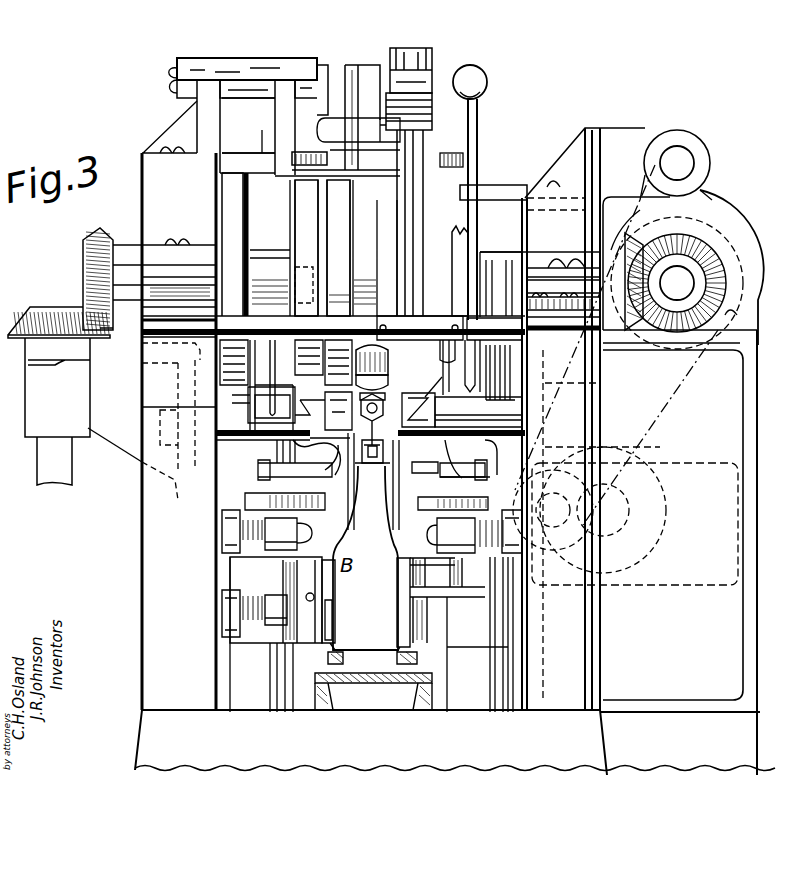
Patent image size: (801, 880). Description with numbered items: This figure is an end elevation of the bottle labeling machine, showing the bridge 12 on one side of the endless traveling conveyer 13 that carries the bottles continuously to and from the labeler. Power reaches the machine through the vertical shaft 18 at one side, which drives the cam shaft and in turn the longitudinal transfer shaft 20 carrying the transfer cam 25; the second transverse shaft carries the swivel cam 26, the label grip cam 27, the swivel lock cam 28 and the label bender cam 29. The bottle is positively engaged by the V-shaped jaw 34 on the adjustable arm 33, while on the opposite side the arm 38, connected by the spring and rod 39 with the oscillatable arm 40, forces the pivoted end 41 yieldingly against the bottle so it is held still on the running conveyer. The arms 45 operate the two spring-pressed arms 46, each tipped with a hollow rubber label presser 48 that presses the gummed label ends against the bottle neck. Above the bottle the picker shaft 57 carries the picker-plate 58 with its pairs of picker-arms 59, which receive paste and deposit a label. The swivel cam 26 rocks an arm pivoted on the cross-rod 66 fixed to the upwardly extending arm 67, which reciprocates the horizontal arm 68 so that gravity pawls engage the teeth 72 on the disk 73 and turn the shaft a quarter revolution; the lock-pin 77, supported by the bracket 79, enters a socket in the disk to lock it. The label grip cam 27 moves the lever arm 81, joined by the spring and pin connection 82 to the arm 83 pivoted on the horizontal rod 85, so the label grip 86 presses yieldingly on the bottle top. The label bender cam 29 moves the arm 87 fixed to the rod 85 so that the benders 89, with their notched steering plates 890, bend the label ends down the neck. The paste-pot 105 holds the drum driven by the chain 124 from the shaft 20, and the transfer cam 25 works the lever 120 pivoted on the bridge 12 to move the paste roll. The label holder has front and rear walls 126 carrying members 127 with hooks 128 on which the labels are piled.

The bridge 12 is at (572, 148).
The traveling conveyer 13 is at (373, 681).
The vertical shaft 18 is at (42, 468).
The longitudinal transfer shaft 20 is at (688, 274).
The transfer cam 25 is at (742, 242).
The swivel cam 26 is at (462, 271).
The label grip cam 27 is at (338, 248).
The swivel lock cam 28 is at (306, 248).
The label bender cam 29 is at (233, 244).
The arm 33 is at (468, 598).
The V-shaped jaw 34 is at (407, 590).
The arm 38 is at (222, 627).
The spring and rod 39 is at (262, 622).
The arm 40 is at (278, 583).
The pivoted end 41 is at (325, 613).
The arm 45 is at (222, 524).
The spring-pressed arm 46 is at (303, 495).
The rubber label presser 48 is at (373, 535).
The picker shaft 57 is at (378, 62).
The picker-plate 58 is at (462, 402).
The picker-arms 59 is at (322, 462).
The cross-rod 66 is at (494, 322).
The upwardly extending arm 67 is at (420, 212).
The horizontal arm 68 is at (410, 48).
The teeth 72 is at (346, 148).
The disk 73 is at (450, 150).
The lock-pin 77 is at (292, 60).
The bracket 79 is at (242, 152).
The arm 81 is at (323, 411).
The spring and pin connection 82 is at (386, 380).
The arm 83 is at (386, 360).
The horizontal rod 85 is at (468, 459).
The label grip 86 is at (376, 419).
The arm 87 is at (262, 380).
The bender 89 is at (428, 466).
The paste-pot 105 is at (676, 584).
The lever 120 is at (710, 193).
The chain 124 is at (650, 438).
The front and rear wall 126 is at (436, 345).
The members 127 is at (470, 362).
The hooks 128 is at (445, 373).
The steering plate 890 is at (373, 481).